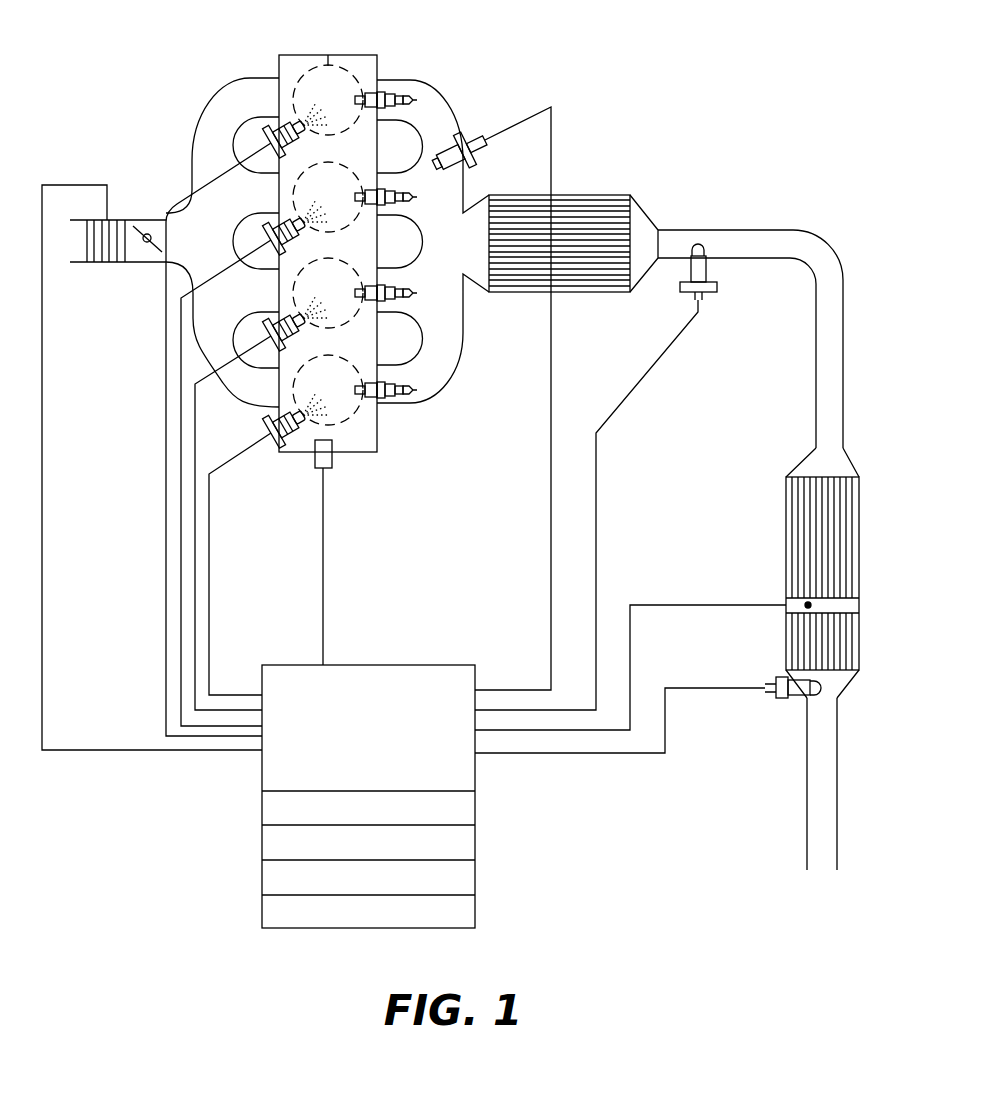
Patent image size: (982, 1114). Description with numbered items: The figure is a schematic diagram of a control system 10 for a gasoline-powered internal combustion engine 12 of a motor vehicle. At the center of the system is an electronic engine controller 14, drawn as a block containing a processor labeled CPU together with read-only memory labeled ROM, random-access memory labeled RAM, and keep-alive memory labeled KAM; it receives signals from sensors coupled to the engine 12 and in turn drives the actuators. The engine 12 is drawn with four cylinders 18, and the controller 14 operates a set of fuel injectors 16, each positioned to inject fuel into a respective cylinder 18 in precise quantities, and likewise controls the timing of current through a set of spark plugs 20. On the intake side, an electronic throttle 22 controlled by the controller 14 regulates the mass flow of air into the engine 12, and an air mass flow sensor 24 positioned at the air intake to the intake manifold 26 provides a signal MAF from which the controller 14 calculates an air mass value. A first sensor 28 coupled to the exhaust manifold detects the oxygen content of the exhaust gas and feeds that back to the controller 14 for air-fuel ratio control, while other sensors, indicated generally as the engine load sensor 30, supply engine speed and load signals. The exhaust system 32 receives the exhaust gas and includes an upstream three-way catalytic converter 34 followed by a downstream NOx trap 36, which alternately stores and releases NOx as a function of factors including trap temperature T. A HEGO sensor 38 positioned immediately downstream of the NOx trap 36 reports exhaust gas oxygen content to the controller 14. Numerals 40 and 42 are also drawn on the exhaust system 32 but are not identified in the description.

The control system 10 is at (172, 922).
The internal combustion engine 12 is at (350, 453).
The electronic engine controller 14 is at (476, 777).
The fuel injectors 16 is at (279, 105).
The cylinder 18 is at (330, 52).
The spark plugs 20 is at (395, 92).
The electronic throttle 22 is at (146, 245).
The air mass flow sensor 24 is at (105, 263).
The intake manifold 26 is at (192, 342).
The first sensor 28 is at (451, 127).
The engine load sensor 30 is at (328, 470).
The exhaust system 32 is at (806, 178).
The three-way catalytic converter 34 is at (598, 195).
The NOx trap 36 is at (787, 499).
The HEGO sensor 38 is at (710, 268).
The downstream exhaust gas sensor 40 is at (790, 700).
The tailpipe 42 is at (806, 818).